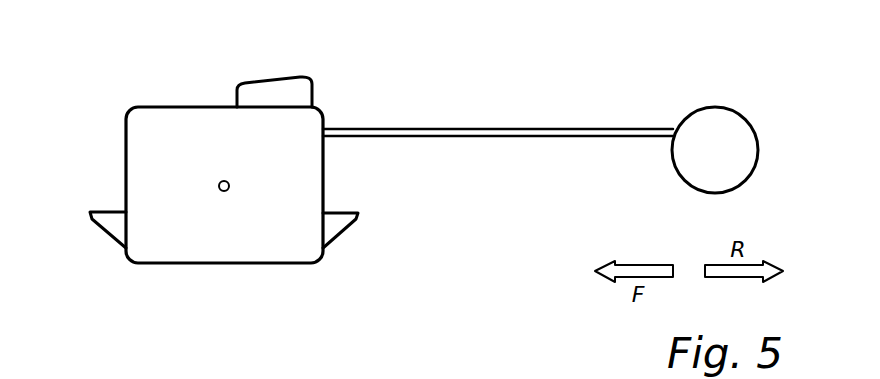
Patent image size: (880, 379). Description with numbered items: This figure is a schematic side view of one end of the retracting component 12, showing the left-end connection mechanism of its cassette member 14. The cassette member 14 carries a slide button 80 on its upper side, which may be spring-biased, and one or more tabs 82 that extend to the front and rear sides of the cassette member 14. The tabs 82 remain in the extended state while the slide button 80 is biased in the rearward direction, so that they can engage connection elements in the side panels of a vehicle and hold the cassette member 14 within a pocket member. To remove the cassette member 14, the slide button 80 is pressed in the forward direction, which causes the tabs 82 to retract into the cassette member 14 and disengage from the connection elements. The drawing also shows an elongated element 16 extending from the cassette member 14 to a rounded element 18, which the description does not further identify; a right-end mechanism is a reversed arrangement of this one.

The retracting component 12 is at (104, 62).
The cassette member 14 is at (162, 255).
The tow bar / rod 16 is at (537, 128).
The trailer ball / coupling 18 is at (716, 107).
The slide button 80 is at (280, 80).
The tabs 82 is at (107, 210).